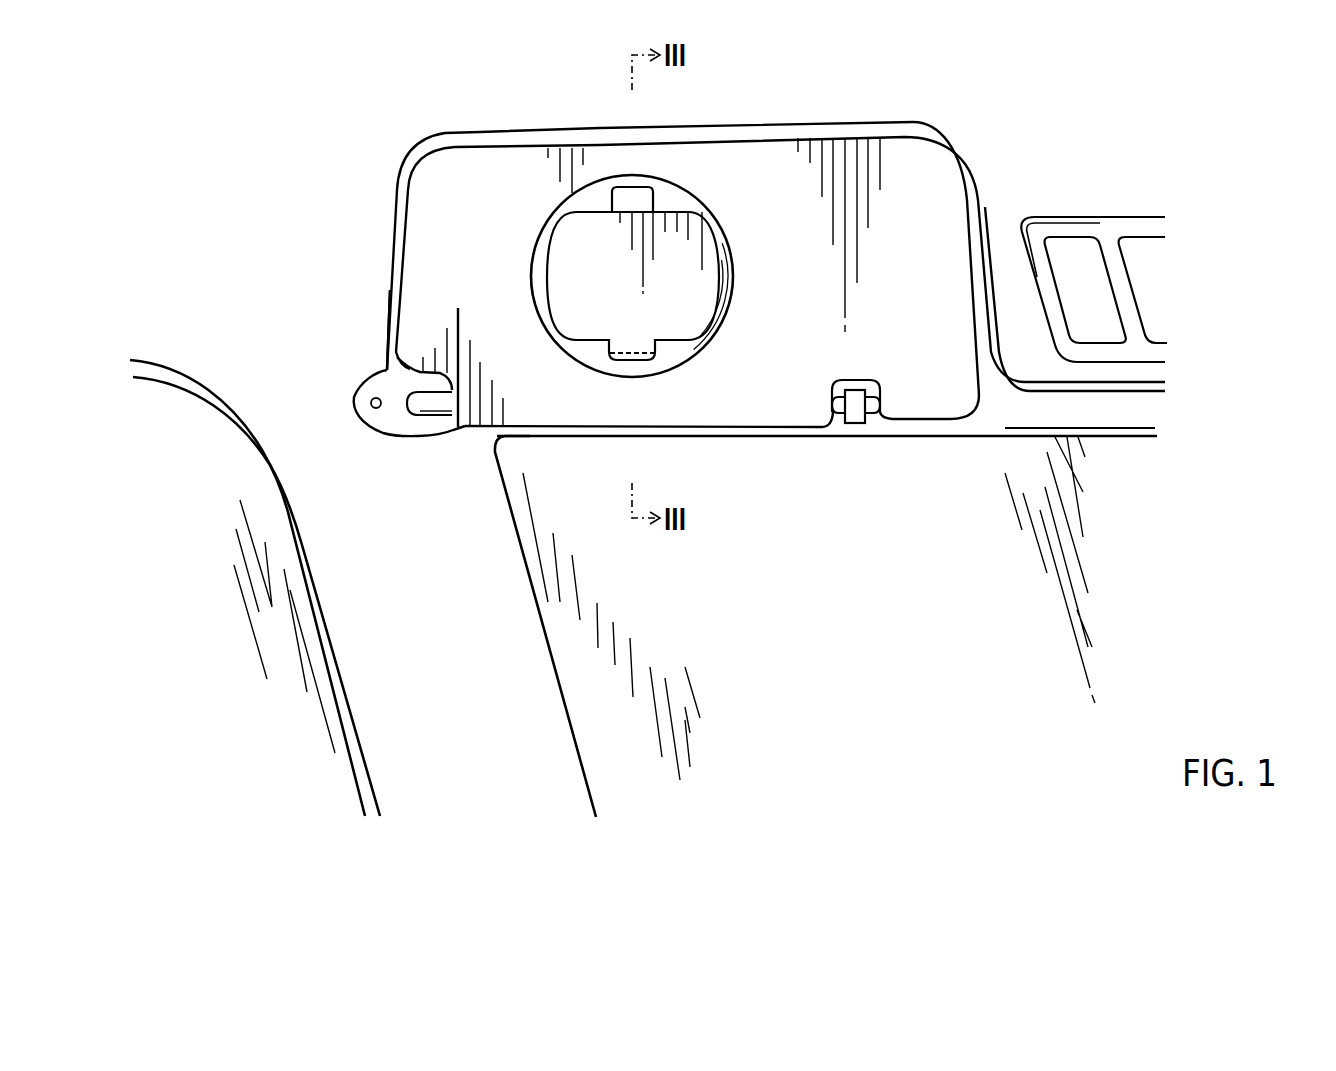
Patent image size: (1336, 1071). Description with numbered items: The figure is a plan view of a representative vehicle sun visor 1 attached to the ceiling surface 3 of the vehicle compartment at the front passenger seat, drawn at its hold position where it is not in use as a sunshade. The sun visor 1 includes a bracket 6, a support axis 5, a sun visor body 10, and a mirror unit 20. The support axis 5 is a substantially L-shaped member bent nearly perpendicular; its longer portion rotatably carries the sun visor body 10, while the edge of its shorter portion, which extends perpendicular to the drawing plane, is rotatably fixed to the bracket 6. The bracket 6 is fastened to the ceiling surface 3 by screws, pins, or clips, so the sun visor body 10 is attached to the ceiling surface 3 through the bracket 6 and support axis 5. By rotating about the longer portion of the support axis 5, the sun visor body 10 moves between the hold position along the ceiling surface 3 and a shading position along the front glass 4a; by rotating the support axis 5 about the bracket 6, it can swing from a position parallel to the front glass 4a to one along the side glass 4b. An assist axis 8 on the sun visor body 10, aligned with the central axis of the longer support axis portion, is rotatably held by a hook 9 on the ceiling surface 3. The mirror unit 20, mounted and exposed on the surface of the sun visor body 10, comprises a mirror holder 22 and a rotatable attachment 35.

The sun visor 1 is at (847, 138).
The ceiling surface 3 is at (948, 428).
The front glass (windshield) 4a is at (918, 653).
The side glass 4b is at (233, 655).
The support axis 5 is at (443, 418).
The bracket 6 is at (386, 428).
The assist axis 8 is at (883, 418).
The hook 9 is at (851, 420).
The sun visor body 10 is at (922, 218).
The mirror unit 20 is at (582, 276).
The mirror holder 22 is at (583, 282).
The rotatable attachment 35 is at (558, 203).